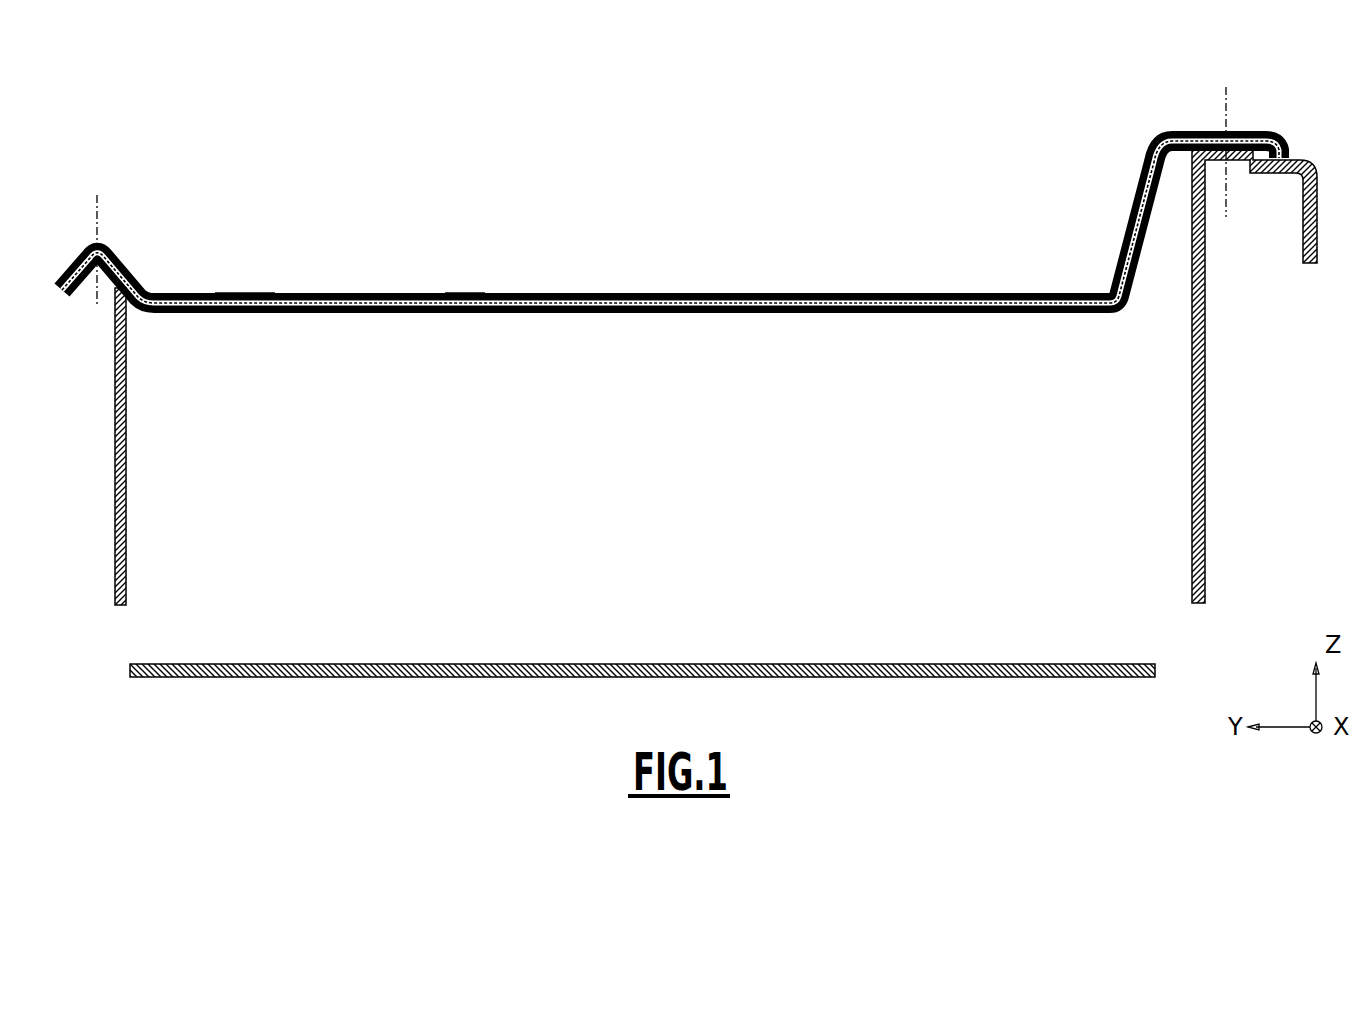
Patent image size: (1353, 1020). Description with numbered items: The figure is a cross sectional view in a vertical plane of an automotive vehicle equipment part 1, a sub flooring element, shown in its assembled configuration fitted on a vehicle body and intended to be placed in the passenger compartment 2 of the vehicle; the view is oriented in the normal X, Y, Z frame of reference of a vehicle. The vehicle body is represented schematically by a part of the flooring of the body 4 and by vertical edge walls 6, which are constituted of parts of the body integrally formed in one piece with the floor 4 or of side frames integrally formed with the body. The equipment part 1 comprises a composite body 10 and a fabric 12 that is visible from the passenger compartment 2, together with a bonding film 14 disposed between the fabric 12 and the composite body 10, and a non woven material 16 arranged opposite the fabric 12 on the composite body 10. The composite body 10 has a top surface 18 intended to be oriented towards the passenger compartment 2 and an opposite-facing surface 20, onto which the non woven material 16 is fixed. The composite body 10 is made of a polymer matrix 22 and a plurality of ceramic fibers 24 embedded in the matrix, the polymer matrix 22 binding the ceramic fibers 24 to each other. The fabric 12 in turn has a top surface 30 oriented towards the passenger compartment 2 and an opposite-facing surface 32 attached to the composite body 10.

The automotive vehicle equipment part 1 is at (682, 396).
The passenger compartment 2 is at (670, 222).
The flooring of the body 4 is at (277, 678).
The vertical edge walls 6 is at (113, 487).
The composite body 10 is at (340, 297).
The fabric 12 is at (465, 291).
The bonding film 14 is at (405, 294).
The non woven material 16 is at (393, 313).
The top surface 18 is at (495, 305).
The opposite-facing surface 20 is at (735, 297).
The polymer matrix 22 is at (523, 292).
The ceramic fibers 24 is at (300, 308).
The top surface 30 is at (245, 291).
The opposite-facing surface 32 is at (196, 303).